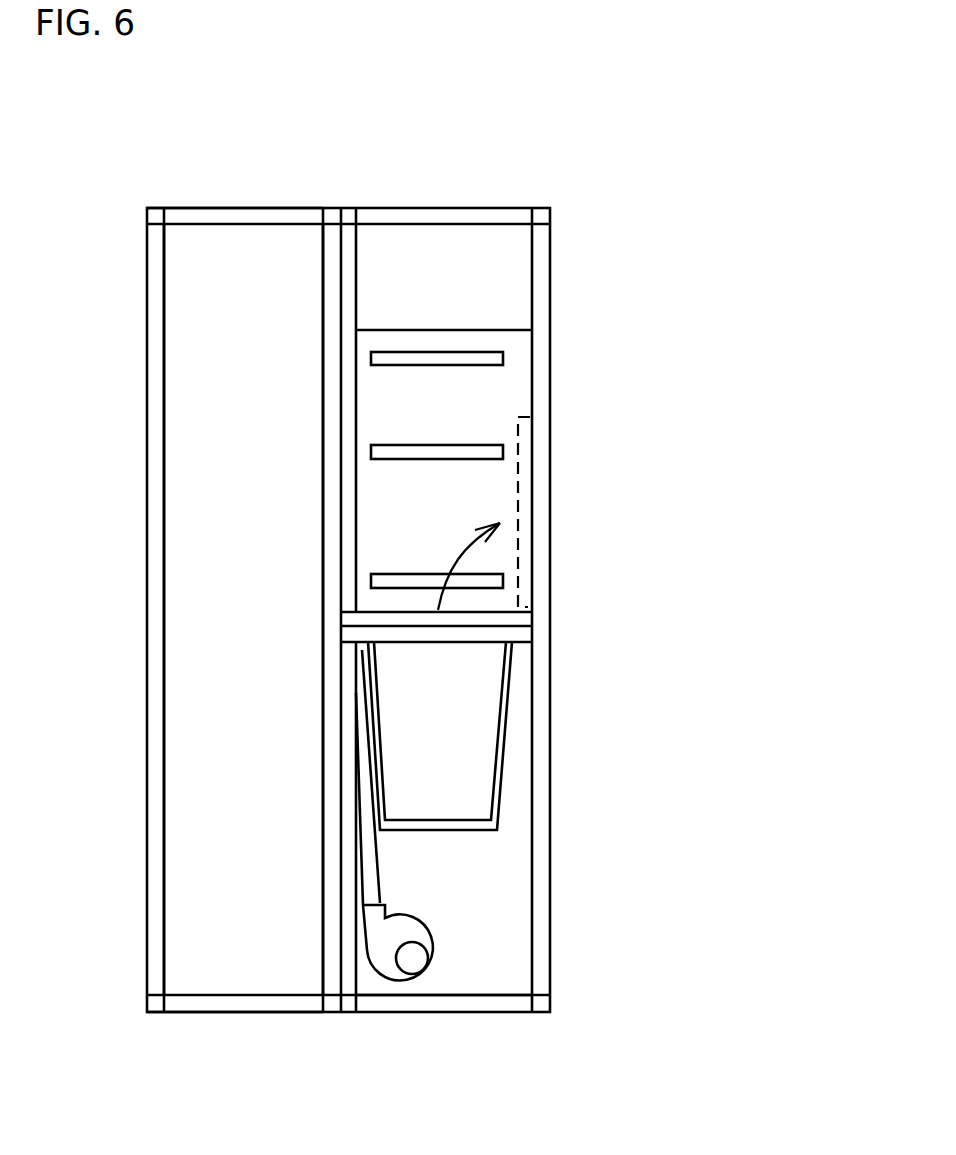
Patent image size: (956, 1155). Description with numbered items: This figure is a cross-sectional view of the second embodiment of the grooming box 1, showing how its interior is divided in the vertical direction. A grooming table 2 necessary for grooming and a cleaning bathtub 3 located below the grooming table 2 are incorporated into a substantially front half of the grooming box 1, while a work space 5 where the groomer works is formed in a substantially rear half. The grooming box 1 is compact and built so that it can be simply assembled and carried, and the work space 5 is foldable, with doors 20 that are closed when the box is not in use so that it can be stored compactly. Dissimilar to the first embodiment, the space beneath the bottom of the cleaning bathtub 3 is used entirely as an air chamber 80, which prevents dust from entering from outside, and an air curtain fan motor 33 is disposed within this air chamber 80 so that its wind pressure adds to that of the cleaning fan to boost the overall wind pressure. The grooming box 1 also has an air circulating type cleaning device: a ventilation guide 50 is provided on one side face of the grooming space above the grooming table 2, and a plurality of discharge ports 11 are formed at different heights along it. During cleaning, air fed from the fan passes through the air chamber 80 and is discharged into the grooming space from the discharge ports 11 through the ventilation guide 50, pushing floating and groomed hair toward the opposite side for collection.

The grooming box 1 is at (412, 208).
The grooming table 2 is at (490, 620).
The cleaning bathtub 3 is at (505, 778).
The work space 5 is at (223, 920).
The discharge ports 11 is at (475, 352).
The doors 20 is at (215, 208).
The air curtain fan motor 33 is at (427, 968).
The ventilation guide 50 is at (523, 347).
The air chamber 80 is at (498, 910).